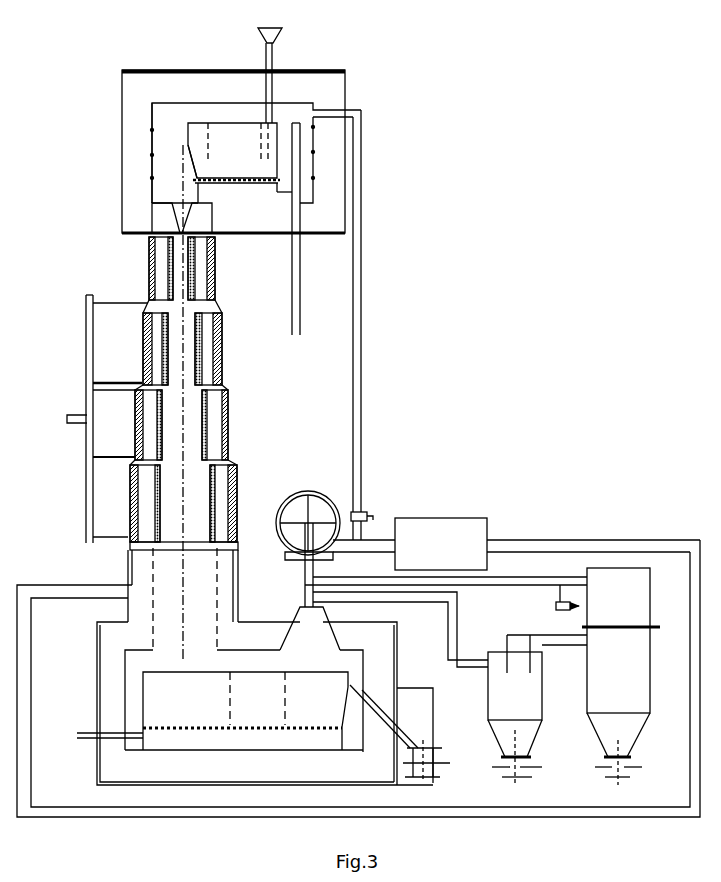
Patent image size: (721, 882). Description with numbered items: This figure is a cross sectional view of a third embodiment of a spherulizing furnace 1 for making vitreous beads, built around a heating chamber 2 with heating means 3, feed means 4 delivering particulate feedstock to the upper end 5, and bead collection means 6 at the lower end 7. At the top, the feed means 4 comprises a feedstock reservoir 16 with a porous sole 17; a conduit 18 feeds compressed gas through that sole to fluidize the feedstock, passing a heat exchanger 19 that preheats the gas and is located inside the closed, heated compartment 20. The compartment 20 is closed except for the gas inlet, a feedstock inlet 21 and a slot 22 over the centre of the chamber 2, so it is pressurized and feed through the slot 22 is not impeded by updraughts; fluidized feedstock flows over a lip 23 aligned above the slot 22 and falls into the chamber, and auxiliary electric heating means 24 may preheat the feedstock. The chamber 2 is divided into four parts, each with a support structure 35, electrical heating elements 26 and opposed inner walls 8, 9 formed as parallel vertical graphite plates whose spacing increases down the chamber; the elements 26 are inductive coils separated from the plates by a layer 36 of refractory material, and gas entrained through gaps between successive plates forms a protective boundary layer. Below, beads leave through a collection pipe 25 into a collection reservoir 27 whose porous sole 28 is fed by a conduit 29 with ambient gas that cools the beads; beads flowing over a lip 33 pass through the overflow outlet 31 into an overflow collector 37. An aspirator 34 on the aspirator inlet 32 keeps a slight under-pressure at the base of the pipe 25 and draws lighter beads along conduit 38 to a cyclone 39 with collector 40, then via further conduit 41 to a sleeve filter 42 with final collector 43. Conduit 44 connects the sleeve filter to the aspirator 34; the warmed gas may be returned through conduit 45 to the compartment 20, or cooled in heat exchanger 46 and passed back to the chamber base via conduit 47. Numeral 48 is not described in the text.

The spherulizing furnace 1 is at (412, 70).
The chamber 2 is at (118, 253).
The means for heating the chamber 3 is at (228, 393).
The feed means 4 is at (325, 70).
The upper end of the chamber 5 is at (160, 232).
The means for collecting vitreous beads 6 is at (88, 580).
The lower end of the chamber 7 is at (168, 548).
The chamber inner wall 8 is at (152, 250).
The chamber inner wall 9 is at (211, 252).
The feedstock reservoir 16 is at (226, 128).
The porous sole 17 is at (216, 184).
The conduit 18 is at (302, 320).
The heat exchanger 19 is at (298, 152).
The compartment 20 is at (286, 108).
The feedstock inlet 21 is at (270, 30).
The slot 22 is at (192, 230).
The lip 23 is at (190, 150).
The auxiliary electric heating means 24 is at (152, 178).
The collection pipe 25 is at (152, 632).
The electrical heating elements 26 is at (170, 272).
The collection reservoir 27 is at (162, 706).
The porous sole 28 is at (190, 731).
The conduit 29 is at (80, 740).
The bead overflow outlet 31 is at (386, 722).
The aspirator inlet 32 is at (302, 620).
The lip 33 is at (358, 692).
The aspirator 34 is at (311, 492).
The support structure 35 is at (145, 322).
The layer of refractory material 36 is at (208, 300).
The overflow collector 37 is at (423, 735).
The conduit 38 is at (448, 622).
The cyclone 39 is at (503, 701).
The cyclone collector 40 is at (520, 752).
The further conduit 41 is at (583, 650).
The sleeve filter 42 is at (607, 683).
The sleeve filter collector 43 is at (625, 752).
The conduit 44 is at (526, 577).
The conduit 45 is at (362, 237).
The heat exchanger 46 is at (425, 556).
The conduit 47 is at (530, 540).
The connecting duct 48 is at (238, 592).